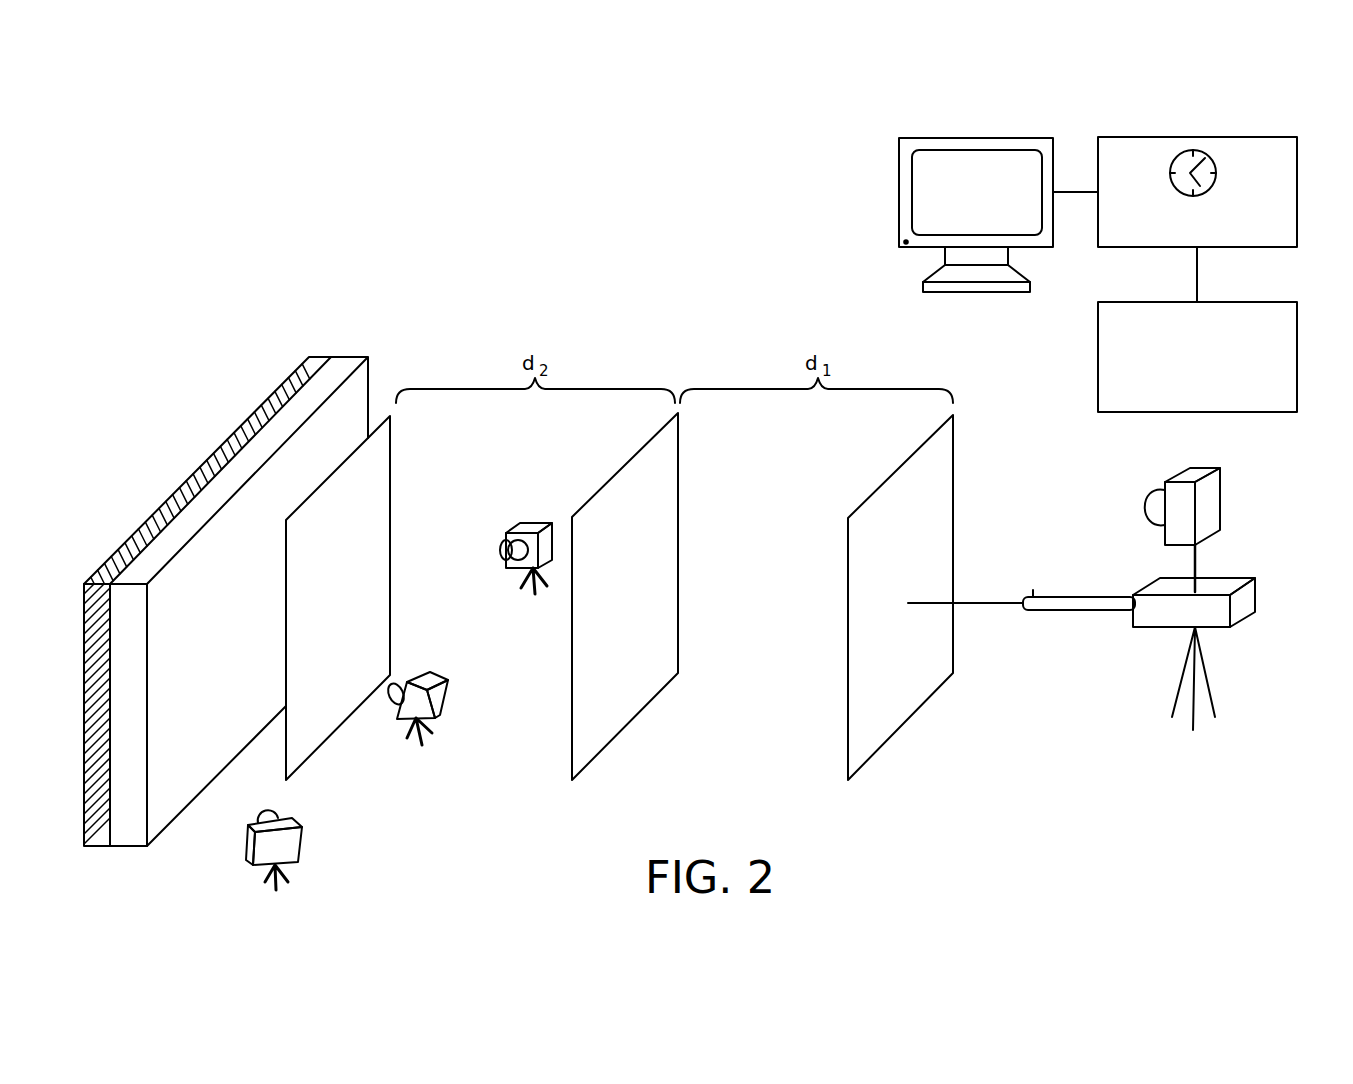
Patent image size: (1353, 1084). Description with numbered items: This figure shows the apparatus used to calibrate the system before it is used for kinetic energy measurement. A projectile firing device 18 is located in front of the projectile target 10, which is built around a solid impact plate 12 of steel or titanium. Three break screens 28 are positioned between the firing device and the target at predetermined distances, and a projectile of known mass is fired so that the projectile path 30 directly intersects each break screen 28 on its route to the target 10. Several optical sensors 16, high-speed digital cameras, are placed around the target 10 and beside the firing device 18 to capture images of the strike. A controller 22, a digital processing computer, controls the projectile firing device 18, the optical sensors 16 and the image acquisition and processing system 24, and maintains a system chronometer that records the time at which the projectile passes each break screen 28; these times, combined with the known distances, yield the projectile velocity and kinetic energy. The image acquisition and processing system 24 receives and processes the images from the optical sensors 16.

The projectile target 10 is at (180, 362).
The solid impact plate 12 is at (312, 357).
The optical sensors 16 is at (512, 562).
The projectile firing device 18 is at (1258, 595).
The controller 22 is at (1183, 137).
The image acquisition and processing system 24 is at (1228, 302).
The break screens 28 is at (392, 439).
The projectile path 30 is at (968, 606).